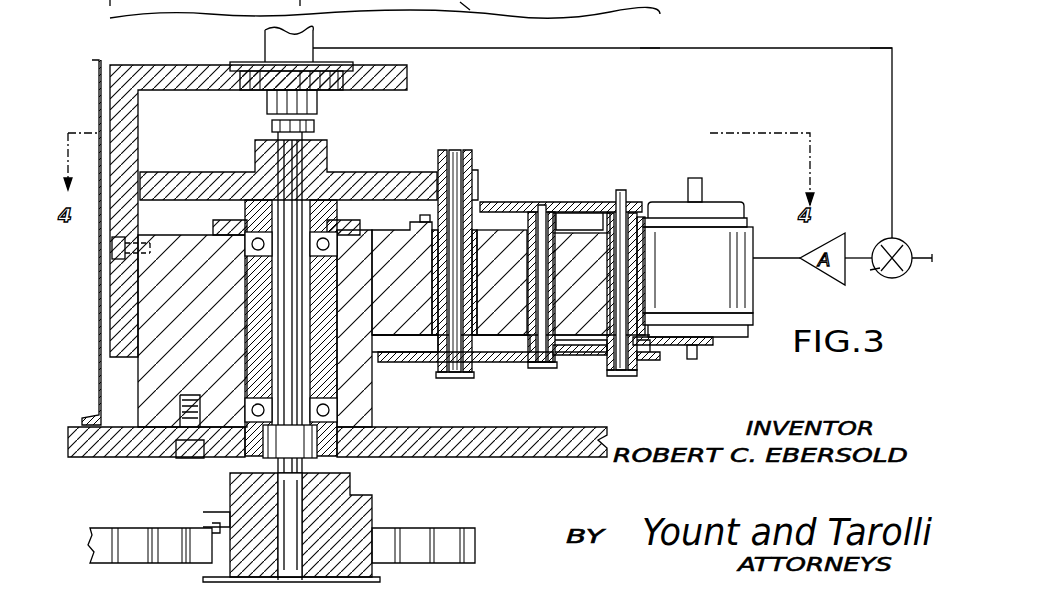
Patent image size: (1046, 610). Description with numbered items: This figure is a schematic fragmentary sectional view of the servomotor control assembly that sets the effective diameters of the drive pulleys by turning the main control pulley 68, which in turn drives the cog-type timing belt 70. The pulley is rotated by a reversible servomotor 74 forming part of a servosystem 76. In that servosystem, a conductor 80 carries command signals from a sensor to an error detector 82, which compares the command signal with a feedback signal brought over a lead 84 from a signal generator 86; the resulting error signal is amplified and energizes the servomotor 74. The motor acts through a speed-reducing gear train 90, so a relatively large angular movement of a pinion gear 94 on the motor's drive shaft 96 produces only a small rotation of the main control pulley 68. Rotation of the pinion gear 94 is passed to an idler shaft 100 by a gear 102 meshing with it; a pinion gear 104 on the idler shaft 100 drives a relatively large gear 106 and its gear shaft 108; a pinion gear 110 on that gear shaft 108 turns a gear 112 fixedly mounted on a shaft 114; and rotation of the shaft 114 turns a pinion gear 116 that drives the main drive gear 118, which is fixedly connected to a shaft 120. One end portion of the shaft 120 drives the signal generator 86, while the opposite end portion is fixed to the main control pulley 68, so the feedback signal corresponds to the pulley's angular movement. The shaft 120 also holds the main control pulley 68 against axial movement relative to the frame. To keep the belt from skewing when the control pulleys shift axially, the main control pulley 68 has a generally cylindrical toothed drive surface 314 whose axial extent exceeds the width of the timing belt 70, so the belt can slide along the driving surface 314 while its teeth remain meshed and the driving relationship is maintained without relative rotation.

The main control pulley 68 is at (352, 497).
The timing belt 70 is at (455, 530).
The reversible servomotor 74 is at (720, 282).
The servosystem 76 is at (900, 8).
The conductor 80 is at (905, 248).
The error detector 82 is at (893, 278).
The lead 84 is at (650, 57).
The signal generator 86 is at (270, 48).
The reduction gear train 90 is at (586, 257).
The pinion gear 94 is at (712, 345).
The drive shaft 96 is at (692, 360).
The idler shaft 100 is at (620, 372).
The gear 102 is at (648, 355).
The pinion gear 104 is at (630, 200).
The gear 106 is at (525, 205).
The gear shaft 108 is at (543, 204).
The pinion gear 110 is at (532, 362).
The gear 112 is at (476, 362).
The shaft 114 is at (440, 374).
The pinion gear 116 is at (440, 150).
The main drive gear 118 is at (395, 152).
The shaft 120 is at (290, 310).
The toothed drive surface 314 is at (212, 525).